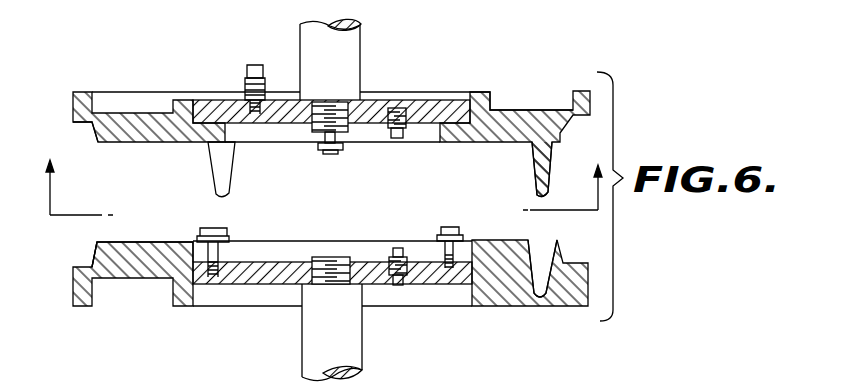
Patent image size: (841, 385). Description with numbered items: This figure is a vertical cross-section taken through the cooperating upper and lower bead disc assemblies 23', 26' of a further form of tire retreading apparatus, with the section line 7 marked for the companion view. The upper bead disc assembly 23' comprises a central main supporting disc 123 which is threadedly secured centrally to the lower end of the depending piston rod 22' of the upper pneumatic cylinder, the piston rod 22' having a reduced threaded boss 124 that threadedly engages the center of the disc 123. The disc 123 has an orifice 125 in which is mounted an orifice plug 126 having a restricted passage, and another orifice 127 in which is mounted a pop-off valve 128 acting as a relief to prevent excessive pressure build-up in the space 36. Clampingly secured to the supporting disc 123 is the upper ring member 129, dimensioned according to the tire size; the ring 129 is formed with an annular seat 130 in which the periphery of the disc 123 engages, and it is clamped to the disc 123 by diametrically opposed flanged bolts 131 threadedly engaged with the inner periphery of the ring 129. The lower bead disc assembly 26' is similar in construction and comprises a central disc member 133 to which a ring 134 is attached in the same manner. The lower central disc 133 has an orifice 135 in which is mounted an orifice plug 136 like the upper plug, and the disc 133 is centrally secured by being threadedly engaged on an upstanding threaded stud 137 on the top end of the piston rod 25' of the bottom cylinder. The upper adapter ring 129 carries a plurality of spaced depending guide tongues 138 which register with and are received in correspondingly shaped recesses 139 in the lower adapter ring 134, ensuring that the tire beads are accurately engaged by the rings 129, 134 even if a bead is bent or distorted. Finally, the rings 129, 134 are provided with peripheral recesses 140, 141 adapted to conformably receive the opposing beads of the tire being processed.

The depending piston rod 22' is at (357, 59).
The upper bead disc assembly 23' is at (298, 143).
The piston rod 25' is at (354, 332).
The lower bead disc assembly 26' is at (295, 284).
The space 36 is at (445, 192).
The section line 7- 7 is at (320, 201).
The central main supporting disc 123 is at (427, 110).
The reduced threaded boss 124 is at (320, 130).
The orifice 125 is at (394, 107).
The orifice plug 126 is at (386, 138).
The orifice 127 is at (252, 114).
The pop-off valve 128 is at (244, 76).
The upper ring member 129 is at (587, 87).
The annular seat 130 is at (453, 110).
The flanged bolts 131 is at (326, 154).
The central disc member 133 is at (263, 279).
The ring 134 is at (122, 240).
The orifice 135 is at (397, 285).
The orifice plug 136 is at (403, 250).
The upstanding threaded stud 137 is at (335, 257).
The depending guide tongues 138 is at (550, 172).
The recesses 139 is at (538, 270).
The peripheral recess 140 is at (85, 125).
The peripheral recess 141 is at (97, 262).